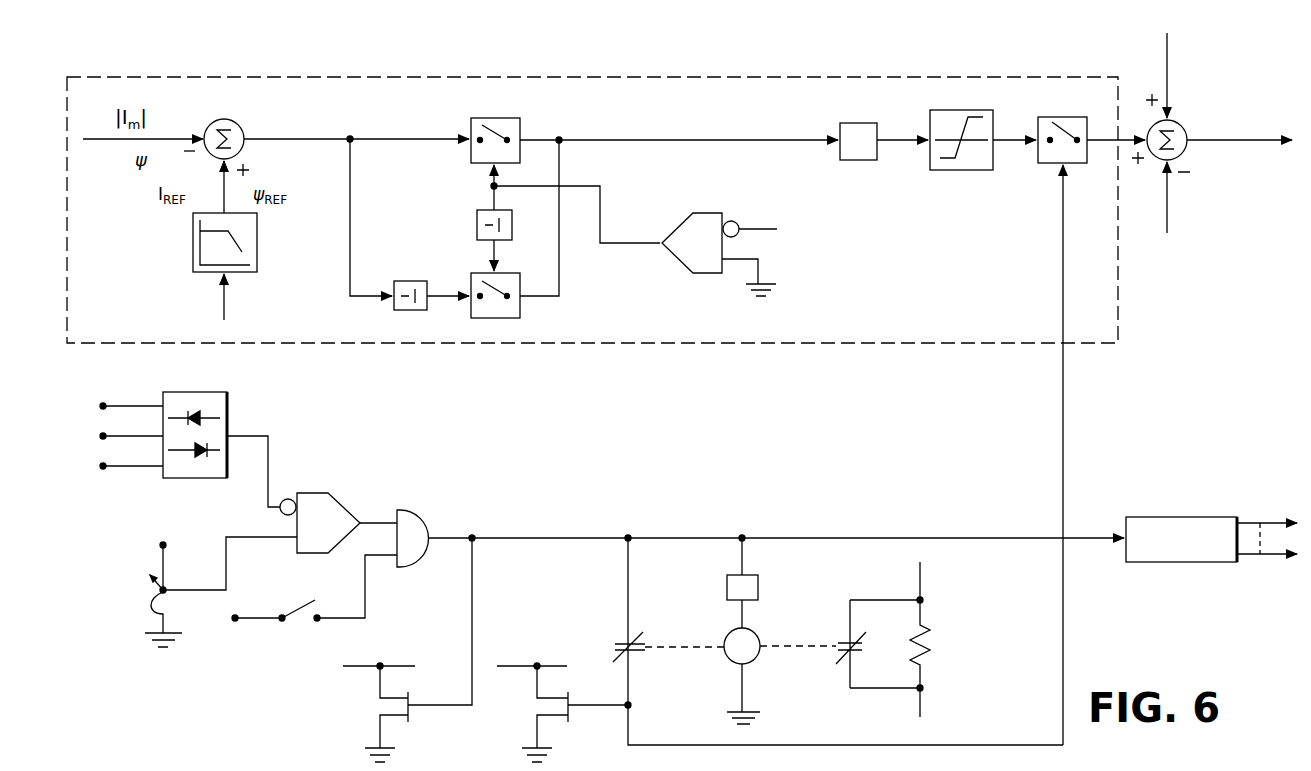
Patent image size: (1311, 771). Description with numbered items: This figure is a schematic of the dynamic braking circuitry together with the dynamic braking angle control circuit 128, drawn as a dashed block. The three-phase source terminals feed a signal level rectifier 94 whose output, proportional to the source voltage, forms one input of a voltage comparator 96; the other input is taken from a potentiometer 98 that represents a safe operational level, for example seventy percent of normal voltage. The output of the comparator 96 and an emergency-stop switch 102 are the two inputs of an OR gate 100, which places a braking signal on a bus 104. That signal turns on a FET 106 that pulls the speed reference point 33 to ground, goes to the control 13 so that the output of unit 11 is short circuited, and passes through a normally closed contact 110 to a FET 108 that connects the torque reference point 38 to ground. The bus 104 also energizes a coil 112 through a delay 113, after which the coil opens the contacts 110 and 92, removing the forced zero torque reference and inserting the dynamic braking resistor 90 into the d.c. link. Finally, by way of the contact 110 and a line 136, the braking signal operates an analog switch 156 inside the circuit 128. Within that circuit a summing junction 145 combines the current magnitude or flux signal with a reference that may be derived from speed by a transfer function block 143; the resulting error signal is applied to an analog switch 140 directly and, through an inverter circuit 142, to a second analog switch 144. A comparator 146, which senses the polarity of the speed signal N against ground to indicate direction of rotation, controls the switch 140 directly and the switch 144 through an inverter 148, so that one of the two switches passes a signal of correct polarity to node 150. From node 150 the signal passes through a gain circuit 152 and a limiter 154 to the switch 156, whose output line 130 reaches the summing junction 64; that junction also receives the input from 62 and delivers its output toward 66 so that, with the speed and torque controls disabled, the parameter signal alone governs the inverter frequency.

The dynamic braking angle control circuit 128 is at (727, 77).
The summing junction 145 is at (240, 121).
The transfer function block 143 is at (193, 240).
The analog switch 140 is at (520, 116).
The node 150 is at (562, 134).
The inverter 148 is at (477, 206).
The inverter circuit 142 is at (410, 281).
The second analog switch 144 is at (520, 318).
The comparator 146 is at (708, 213).
The gain circuit 152 is at (874, 110).
The limiter 154 is at (952, 110).
The analog switch 156 is at (1060, 117).
The output line 130 is at (1122, 138).
The summing junction 64 is at (1186, 122).
The input from FIG. 1 62 is at (1170, 54).
The output to FIG. 1 66 is at (1272, 141).
The signal level rectifier 94 is at (228, 392).
The voltage comparator 96 is at (330, 495).
The OR gate 100 is at (408, 508).
The potentiometer 98 is at (150, 598).
The switch 102 is at (305, 636).
The bus 104 is at (892, 520).
The speed reference point 33 is at (382, 662).
The torque reference point 38 is at (540, 662).
The field effect transistor 106 is at (395, 724).
The field effect transistor 108 is at (558, 727).
The normally closed contact 110 is at (620, 634).
The delay 113 is at (760, 590).
The coil 112 is at (724, 632).
The contact 92 is at (836, 664).
The dynamic braking resistor 90 is at (940, 642).
The line 136 is at (1063, 413).
The control 13 is at (1205, 516).
The unit 11 is at (1268, 584).